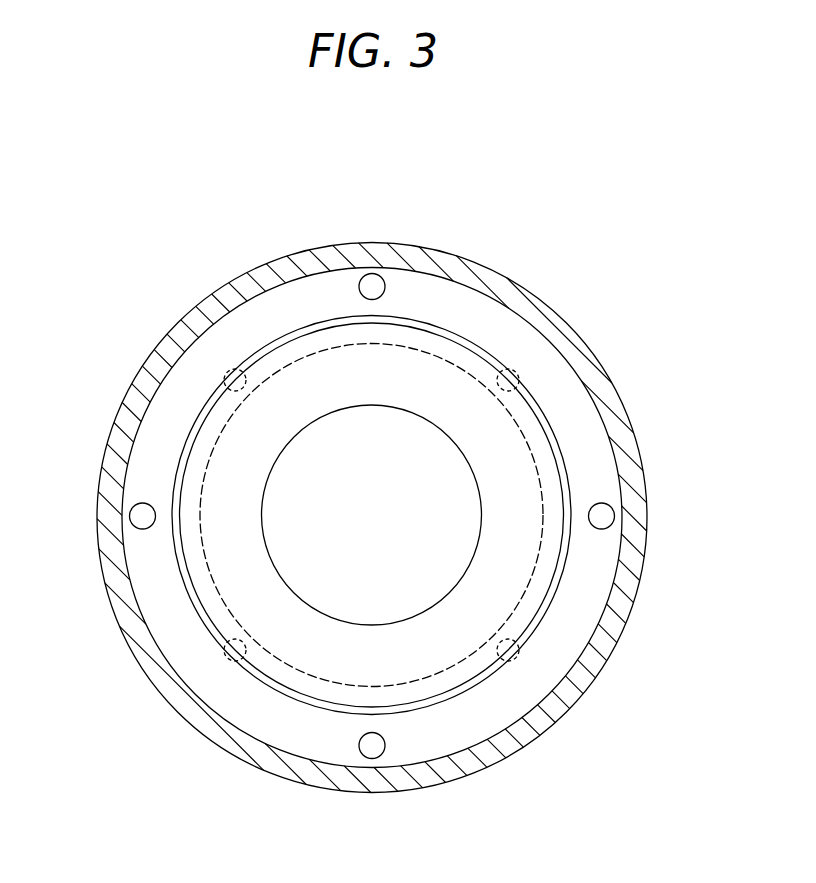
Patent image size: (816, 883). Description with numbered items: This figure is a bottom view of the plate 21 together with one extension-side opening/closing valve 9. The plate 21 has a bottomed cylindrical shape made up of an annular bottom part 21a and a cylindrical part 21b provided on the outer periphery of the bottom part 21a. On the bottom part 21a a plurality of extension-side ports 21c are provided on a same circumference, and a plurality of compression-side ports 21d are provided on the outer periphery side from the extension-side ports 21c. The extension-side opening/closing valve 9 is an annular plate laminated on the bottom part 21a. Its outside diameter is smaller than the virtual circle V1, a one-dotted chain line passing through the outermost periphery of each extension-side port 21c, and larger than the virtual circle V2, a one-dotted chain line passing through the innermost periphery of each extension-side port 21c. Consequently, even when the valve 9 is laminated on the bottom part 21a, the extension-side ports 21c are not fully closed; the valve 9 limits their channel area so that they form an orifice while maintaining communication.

The plate 21 is at (612, 366).
The bottom part 21a is at (583, 587).
The cylindrical part 21b is at (618, 393).
The extension-side port 21c is at (500, 375).
The compression-side port 21d is at (372, 282).
The extension-side opening/closing valve 9 is at (500, 583).
The virtual circle V1 is at (570, 461).
The virtual circle V2 is at (515, 415).